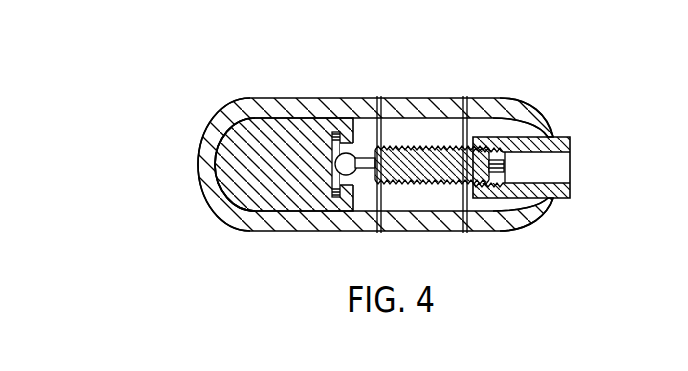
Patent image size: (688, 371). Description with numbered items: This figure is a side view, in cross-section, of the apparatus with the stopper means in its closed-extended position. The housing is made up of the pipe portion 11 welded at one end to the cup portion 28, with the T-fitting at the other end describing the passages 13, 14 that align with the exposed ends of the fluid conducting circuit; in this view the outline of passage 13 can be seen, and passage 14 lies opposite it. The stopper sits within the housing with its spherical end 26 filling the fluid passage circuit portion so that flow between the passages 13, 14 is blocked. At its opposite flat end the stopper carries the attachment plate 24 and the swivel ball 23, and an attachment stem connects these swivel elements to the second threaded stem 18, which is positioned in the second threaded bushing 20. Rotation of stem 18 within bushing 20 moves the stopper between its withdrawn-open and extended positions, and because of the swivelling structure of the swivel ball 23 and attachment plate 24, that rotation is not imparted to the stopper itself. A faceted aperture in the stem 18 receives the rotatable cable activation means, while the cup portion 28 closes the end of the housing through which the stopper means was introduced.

The pipe portion 11 is at (433, 97).
The passage 13 is at (212, 127).
The passage 14 is at (215, 188).
The second threaded stem 18 is at (441, 176).
The second threaded bushing 20 is at (553, 137).
The swivel ball 23 is at (357, 147).
The attachment plate 24 is at (328, 204).
The spherical end 26 is at (263, 116).
The cup portion 28 is at (516, 104).